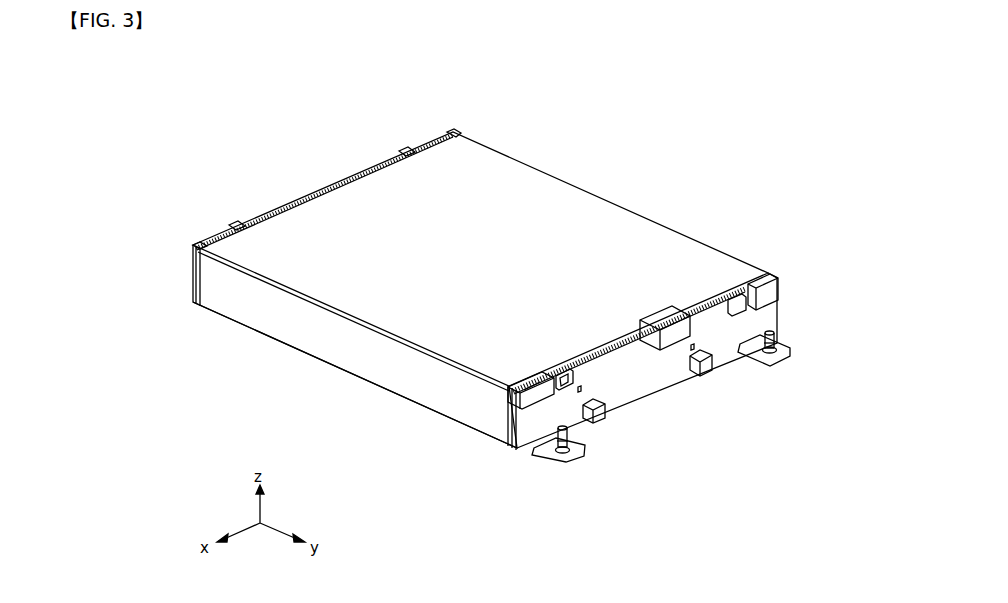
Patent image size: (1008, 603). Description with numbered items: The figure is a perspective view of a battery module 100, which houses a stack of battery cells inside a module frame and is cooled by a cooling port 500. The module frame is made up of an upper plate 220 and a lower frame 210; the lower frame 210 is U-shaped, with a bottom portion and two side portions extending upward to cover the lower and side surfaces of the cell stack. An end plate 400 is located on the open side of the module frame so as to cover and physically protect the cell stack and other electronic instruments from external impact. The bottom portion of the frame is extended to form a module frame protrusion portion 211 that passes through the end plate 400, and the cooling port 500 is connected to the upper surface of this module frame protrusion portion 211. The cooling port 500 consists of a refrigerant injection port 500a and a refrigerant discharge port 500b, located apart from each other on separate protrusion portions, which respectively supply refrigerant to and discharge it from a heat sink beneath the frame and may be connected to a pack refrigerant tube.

The battery module 100 is at (565, 77).
The lower frame 210 is at (345, 355).
The module frame protrusion portion 211 is at (585, 442).
The upper plate 220 is at (585, 212).
The end plate 400 is at (640, 382).
The cooling port 500 is at (808, 163).
The refrigerant injection port 500a is at (778, 340).
The refrigerant discharge port 500b is at (545, 452).